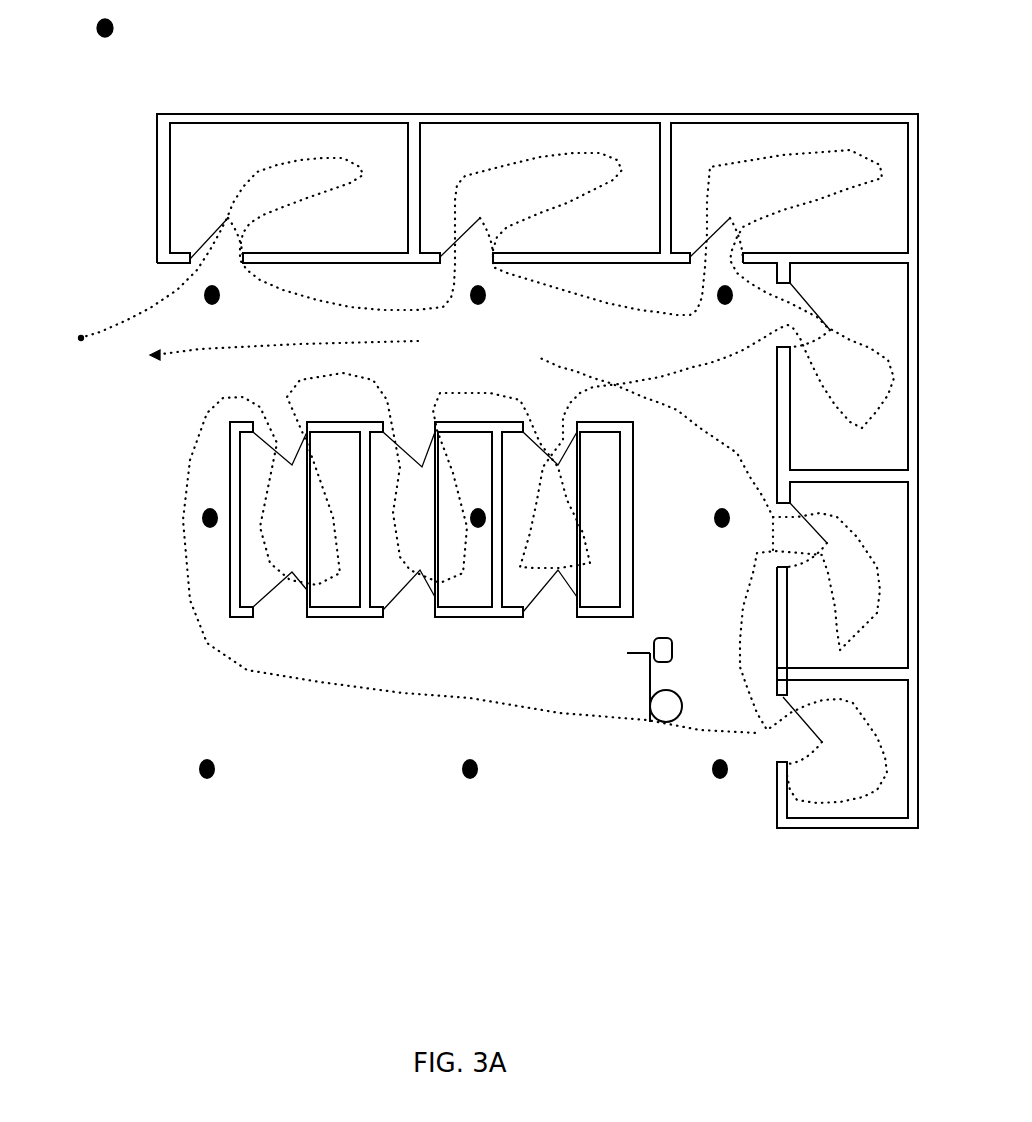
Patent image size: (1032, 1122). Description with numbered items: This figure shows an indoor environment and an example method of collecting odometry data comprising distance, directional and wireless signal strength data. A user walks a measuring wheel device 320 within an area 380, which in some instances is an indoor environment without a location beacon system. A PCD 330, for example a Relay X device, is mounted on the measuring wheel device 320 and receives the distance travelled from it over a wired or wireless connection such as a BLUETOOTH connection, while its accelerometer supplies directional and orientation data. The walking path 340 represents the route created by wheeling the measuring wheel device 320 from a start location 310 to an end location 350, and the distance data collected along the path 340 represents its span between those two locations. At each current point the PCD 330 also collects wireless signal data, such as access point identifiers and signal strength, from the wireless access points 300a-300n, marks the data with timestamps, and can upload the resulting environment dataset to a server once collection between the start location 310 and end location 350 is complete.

The wireless access points 300a-300n is at (455, 41).
The start location 310 is at (45, 329).
The measuring wheel device 320 is at (646, 673).
The PCD 330 is at (666, 631).
The path 340 is at (364, 695).
The end location 350 is at (124, 375).
The area 380 is at (663, 866).